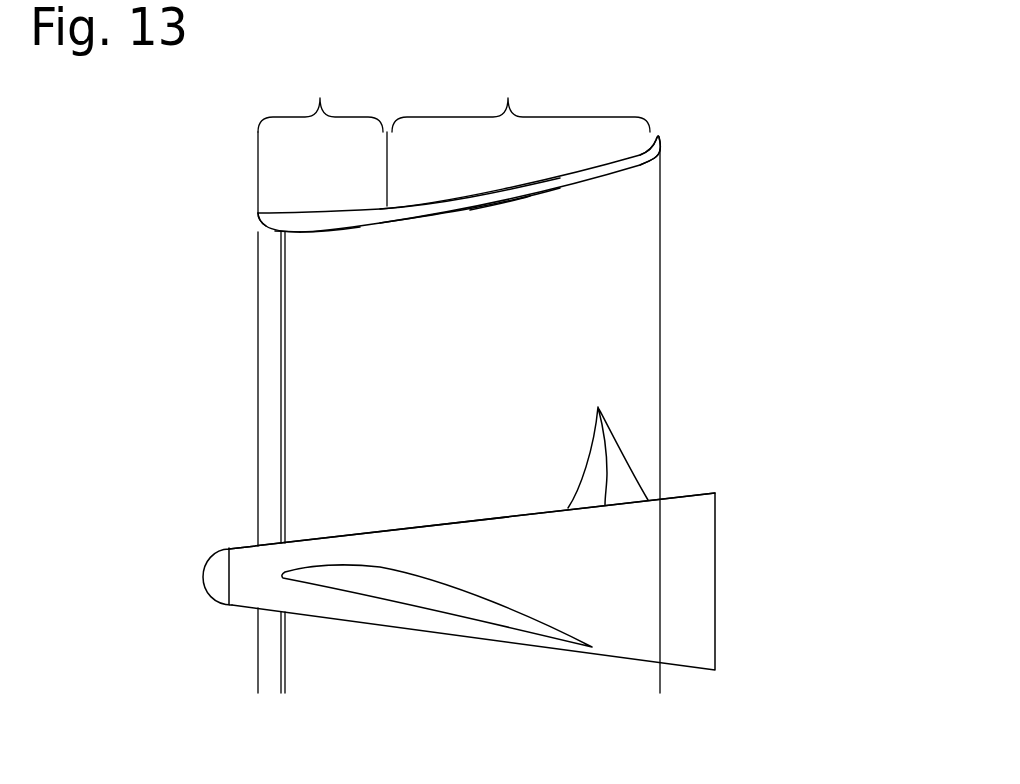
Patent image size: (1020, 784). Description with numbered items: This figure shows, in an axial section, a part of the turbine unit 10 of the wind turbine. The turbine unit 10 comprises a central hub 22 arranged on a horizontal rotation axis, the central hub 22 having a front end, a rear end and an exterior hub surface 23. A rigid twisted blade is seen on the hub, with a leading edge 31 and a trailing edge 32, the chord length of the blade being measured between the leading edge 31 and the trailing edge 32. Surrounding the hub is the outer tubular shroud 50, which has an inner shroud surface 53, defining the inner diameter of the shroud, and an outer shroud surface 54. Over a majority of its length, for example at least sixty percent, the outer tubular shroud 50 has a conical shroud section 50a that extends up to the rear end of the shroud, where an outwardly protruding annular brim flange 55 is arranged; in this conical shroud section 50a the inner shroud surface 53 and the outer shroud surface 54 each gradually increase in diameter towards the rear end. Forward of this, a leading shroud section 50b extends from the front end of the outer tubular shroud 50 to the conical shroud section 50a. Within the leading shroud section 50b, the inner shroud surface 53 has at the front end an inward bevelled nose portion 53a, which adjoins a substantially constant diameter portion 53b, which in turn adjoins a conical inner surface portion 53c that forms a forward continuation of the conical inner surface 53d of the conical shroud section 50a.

The turbine unit 10 is at (742, 556).
The central hub 22 is at (263, 567).
The exterior hub surface 23 is at (347, 533).
The leading edge 31 is at (282, 395).
The trailing edge 32 is at (622, 447).
The outer tubular shroud 50 is at (618, 190).
The conical shroud section 50a is at (521, 100).
The leading shroud section 50b is at (320, 100).
The inner shroud surface 53 is at (468, 230).
The inward bevelled nose portion 53a is at (268, 232).
The substantially constant diameter portion 53b is at (297, 232).
The conical inner surface portion 53c is at (348, 228).
The conical inner surface 53d is at (498, 205).
The outer shroud surface 54 is at (437, 208).
The brim flange 55 is at (660, 150).